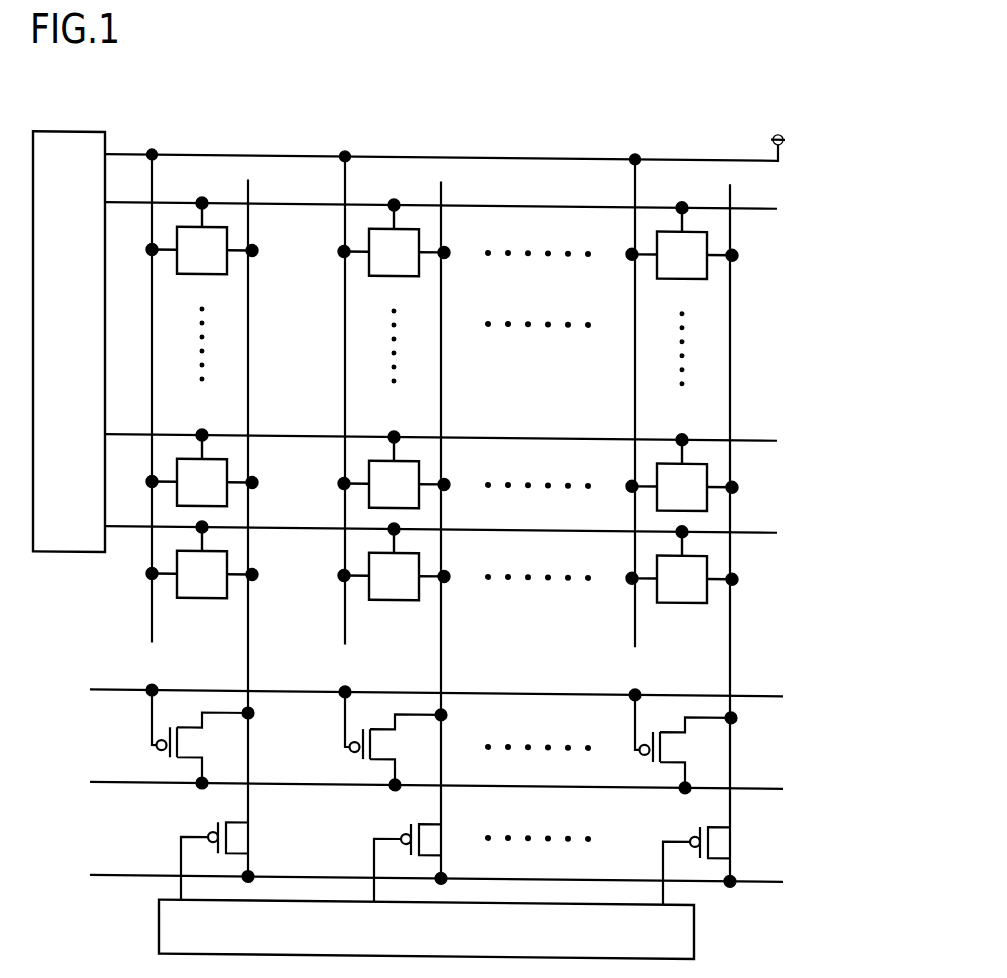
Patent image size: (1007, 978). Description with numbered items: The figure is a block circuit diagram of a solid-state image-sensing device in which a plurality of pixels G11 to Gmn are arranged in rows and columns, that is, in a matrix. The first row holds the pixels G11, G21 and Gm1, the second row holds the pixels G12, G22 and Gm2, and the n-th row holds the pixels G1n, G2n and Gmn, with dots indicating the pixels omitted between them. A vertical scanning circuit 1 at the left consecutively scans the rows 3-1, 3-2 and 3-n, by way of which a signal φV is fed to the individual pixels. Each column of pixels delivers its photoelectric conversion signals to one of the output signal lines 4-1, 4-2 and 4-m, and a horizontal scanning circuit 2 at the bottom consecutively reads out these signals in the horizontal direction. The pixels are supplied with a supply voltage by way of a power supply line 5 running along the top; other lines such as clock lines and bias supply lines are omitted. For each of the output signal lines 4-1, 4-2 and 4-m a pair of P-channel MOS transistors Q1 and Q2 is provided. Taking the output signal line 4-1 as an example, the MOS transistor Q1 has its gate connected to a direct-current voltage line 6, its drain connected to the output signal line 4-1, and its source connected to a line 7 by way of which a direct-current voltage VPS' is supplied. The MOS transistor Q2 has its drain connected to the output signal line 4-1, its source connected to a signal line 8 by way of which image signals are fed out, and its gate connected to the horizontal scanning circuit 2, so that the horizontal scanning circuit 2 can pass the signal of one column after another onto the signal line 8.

The vertical scanning circuit 1 is at (68, 135).
The horizontal scanning circuit 2 is at (695, 928).
The row 3-n is at (765, 205).
The row 3-2 is at (765, 437).
The row 3-1 is at (765, 529).
The output signal line 4-1 is at (248, 656).
The output signal line 4-2 is at (441, 656).
The output signal line 4-m is at (730, 656).
The power supply line 5 is at (667, 157).
The direct-current voltage line 6 is at (765, 692).
The line 7 is at (765, 785).
The signal line 8 is at (765, 878).
The pixel G1n is at (182, 229).
The pixel G2n is at (374, 229).
The pixel Gmn is at (662, 229).
The pixel G12 is at (182, 461).
The pixel G22 is at (374, 461).
The pixel Gm2 is at (662, 461).
The pixel G11 is at (203, 600).
The pixel G21 is at (395, 600).
The pixel Gm1 is at (683, 600).
The MOS transistor Q1 is at (437, 738).
The MOS transistor Q2 is at (458, 864).